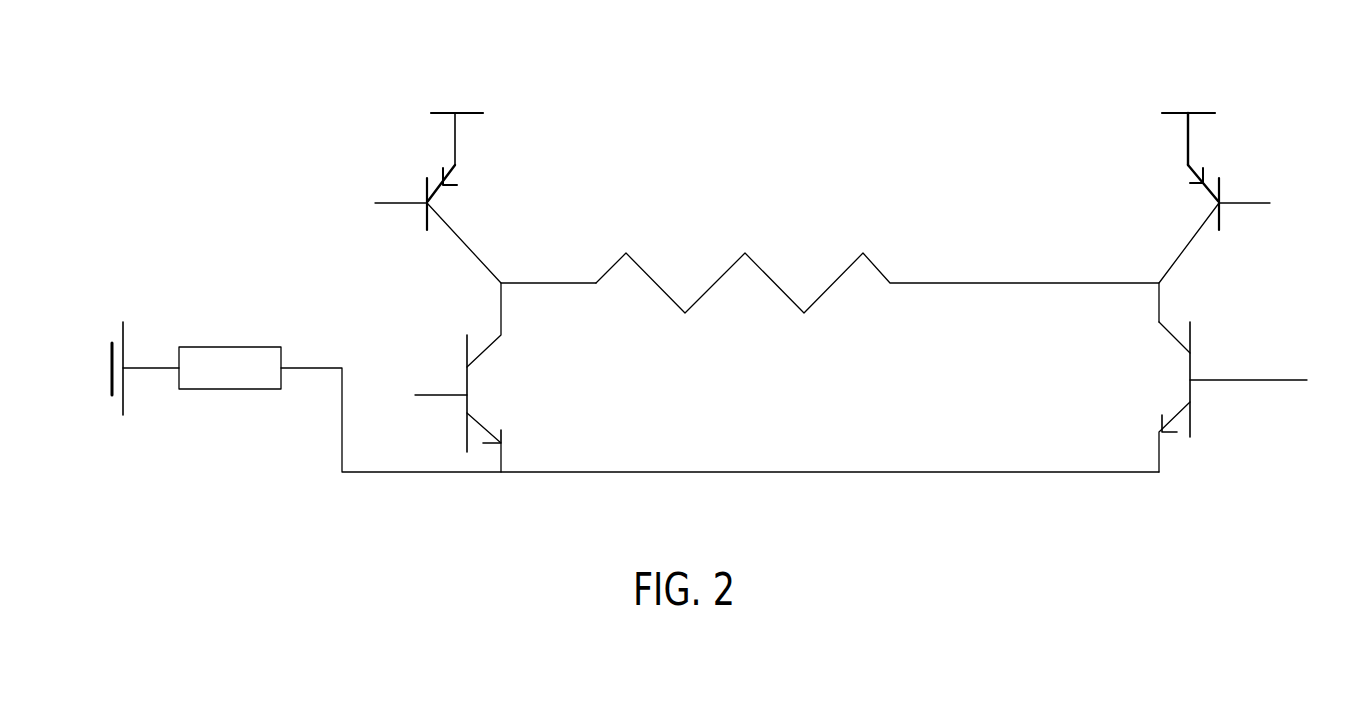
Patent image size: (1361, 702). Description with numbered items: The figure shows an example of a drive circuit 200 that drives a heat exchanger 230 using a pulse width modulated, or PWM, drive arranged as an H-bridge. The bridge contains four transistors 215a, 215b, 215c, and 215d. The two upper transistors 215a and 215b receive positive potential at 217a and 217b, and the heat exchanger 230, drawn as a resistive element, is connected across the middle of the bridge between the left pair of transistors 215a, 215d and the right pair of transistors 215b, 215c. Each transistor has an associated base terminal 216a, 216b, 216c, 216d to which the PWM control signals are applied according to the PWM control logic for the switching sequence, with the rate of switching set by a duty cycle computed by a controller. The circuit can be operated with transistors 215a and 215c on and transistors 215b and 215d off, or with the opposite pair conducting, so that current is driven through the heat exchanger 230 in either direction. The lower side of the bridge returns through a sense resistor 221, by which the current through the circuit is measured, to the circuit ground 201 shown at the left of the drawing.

The drive circuit 200 is at (287, 88).
The circuit ground 201 is at (125, 330).
The sense resistor 221 is at (230, 347).
The transistor 215a is at (448, 203).
The transistor 215b is at (1198, 203).
The transistor 215c is at (1177, 390).
The transistor 215d is at (485, 395).
The base terminal 216a is at (390, 205).
The base terminal 216b is at (1240, 205).
The base terminal 216c is at (1262, 380).
The base terminal 216d is at (437, 392).
The positive potential terminal 217a is at (482, 113).
The positive potential terminal 217b is at (1162, 113).
The heat exchanger 230 is at (755, 262).